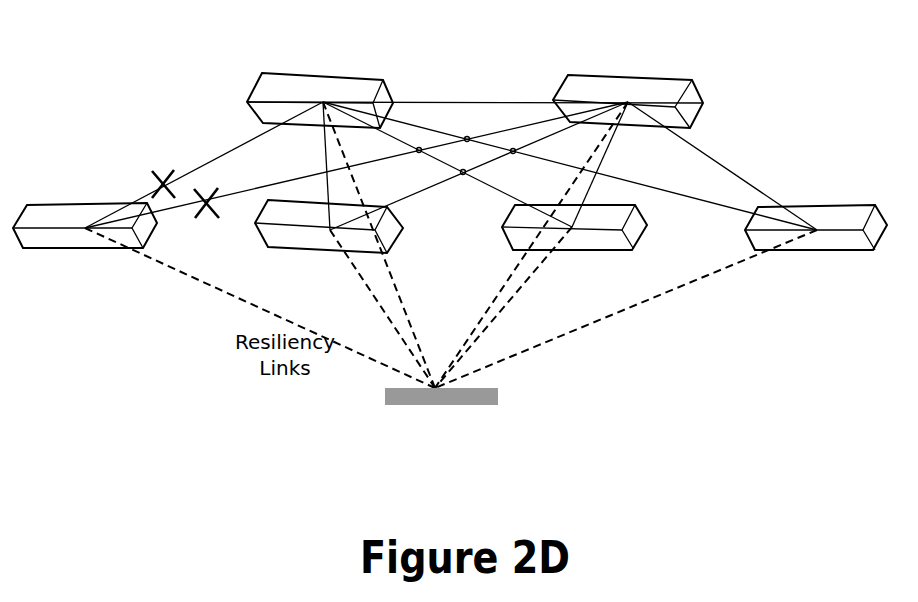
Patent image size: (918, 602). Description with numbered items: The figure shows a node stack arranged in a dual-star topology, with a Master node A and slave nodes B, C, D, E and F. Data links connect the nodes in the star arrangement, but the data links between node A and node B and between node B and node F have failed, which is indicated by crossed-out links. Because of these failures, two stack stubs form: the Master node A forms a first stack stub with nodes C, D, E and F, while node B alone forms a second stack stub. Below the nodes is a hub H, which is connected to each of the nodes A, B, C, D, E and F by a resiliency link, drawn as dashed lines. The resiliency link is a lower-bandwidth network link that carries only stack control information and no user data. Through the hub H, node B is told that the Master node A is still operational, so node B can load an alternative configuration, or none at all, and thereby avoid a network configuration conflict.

The Master node A is at (355, 75).
The slave node B is at (85, 252).
The slave node C is at (329, 253).
The slave node D is at (574, 253).
The slave node E is at (816, 253).
The slave node F is at (628, 74).
The hub H is at (658, 408).